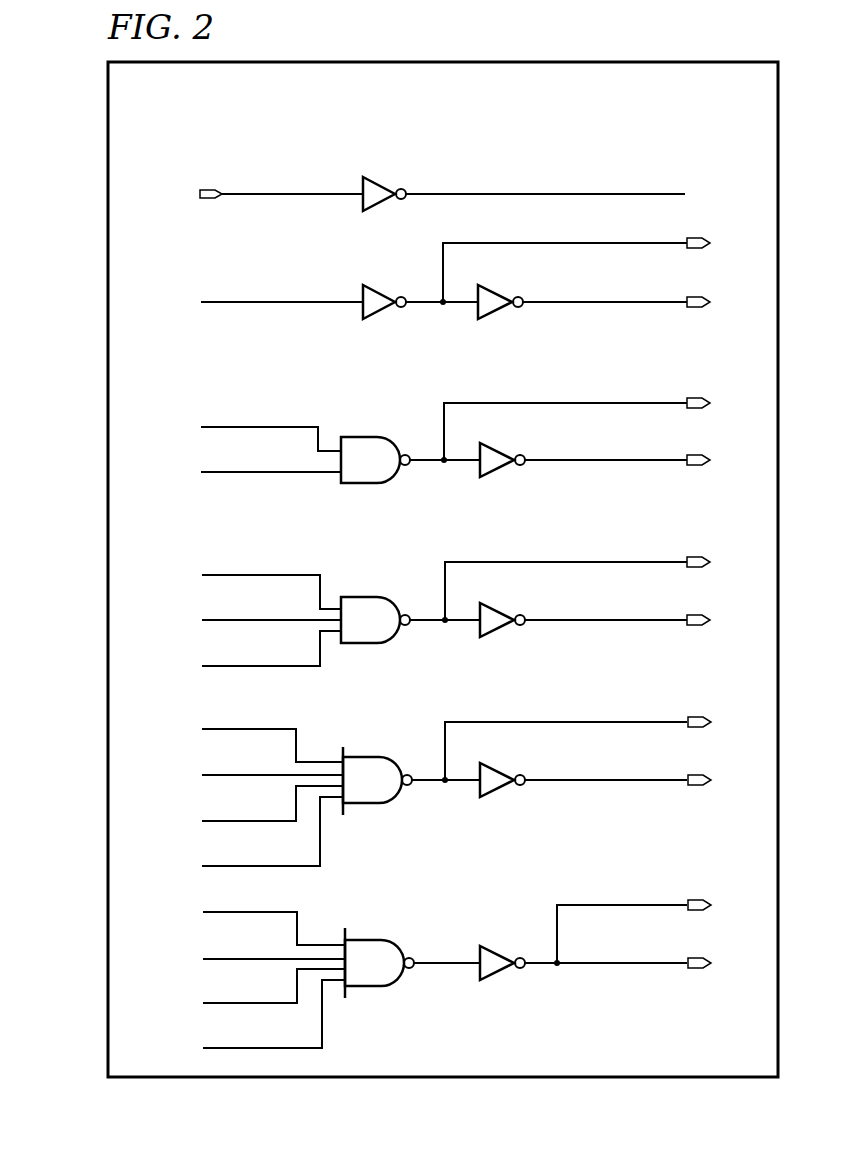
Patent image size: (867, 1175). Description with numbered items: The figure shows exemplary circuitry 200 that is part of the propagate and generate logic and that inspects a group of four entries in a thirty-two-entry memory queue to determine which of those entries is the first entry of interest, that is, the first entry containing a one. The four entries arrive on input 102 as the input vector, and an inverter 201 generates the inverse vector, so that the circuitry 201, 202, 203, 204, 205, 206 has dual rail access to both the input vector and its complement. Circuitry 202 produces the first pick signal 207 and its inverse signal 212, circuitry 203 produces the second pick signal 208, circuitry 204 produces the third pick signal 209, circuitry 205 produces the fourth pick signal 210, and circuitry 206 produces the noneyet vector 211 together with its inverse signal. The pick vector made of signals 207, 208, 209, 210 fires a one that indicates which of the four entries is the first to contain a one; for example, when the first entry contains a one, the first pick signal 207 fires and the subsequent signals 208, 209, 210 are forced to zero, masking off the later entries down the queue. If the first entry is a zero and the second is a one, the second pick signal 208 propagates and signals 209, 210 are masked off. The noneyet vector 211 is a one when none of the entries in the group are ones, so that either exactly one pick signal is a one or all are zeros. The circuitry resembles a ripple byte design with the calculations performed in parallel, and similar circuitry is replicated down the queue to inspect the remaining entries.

The circuitry 200 is at (108, 581).
The input 102 is at (252, 144).
The inverter 201 is at (381, 179).
The circuitry 202 is at (193, 277).
The circuitry 203 is at (193, 398).
The circuitry 204 is at (193, 670).
The circuitry 205 is at (195, 700).
The circuitry 206 is at (197, 883).
The pick[0] signal 207 is at (707, 302).
The pick[1] signal 208 is at (707, 460).
The pick[2] signal 209 is at (707, 622).
The pick[3] signal 210 is at (708, 782).
The noneyet vector 211 is at (708, 965).
The pickx[0] signal 212 is at (707, 243).